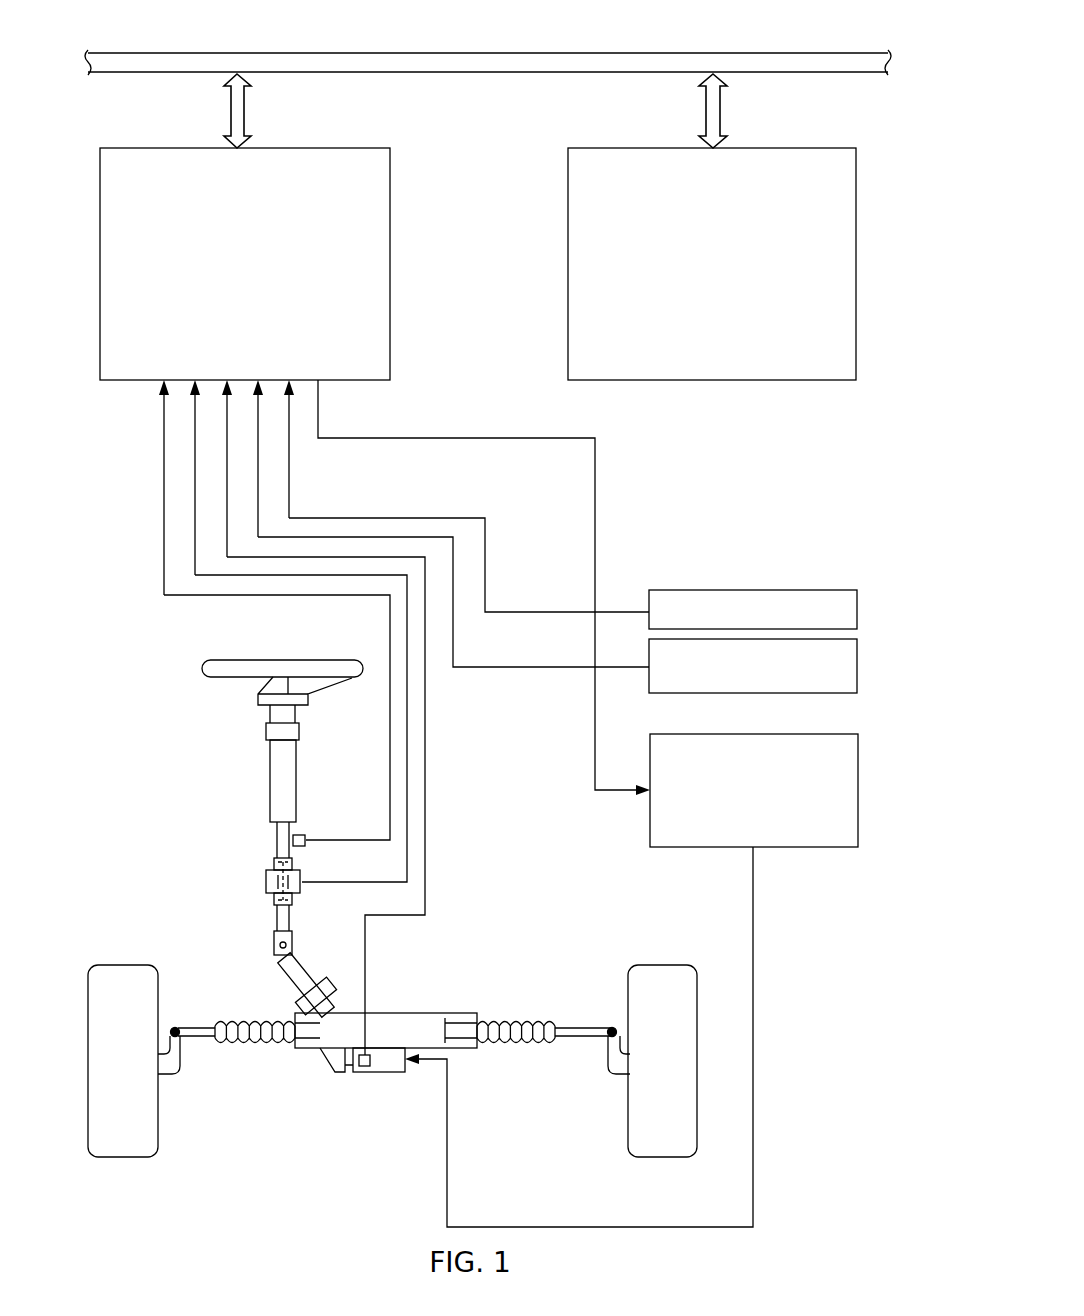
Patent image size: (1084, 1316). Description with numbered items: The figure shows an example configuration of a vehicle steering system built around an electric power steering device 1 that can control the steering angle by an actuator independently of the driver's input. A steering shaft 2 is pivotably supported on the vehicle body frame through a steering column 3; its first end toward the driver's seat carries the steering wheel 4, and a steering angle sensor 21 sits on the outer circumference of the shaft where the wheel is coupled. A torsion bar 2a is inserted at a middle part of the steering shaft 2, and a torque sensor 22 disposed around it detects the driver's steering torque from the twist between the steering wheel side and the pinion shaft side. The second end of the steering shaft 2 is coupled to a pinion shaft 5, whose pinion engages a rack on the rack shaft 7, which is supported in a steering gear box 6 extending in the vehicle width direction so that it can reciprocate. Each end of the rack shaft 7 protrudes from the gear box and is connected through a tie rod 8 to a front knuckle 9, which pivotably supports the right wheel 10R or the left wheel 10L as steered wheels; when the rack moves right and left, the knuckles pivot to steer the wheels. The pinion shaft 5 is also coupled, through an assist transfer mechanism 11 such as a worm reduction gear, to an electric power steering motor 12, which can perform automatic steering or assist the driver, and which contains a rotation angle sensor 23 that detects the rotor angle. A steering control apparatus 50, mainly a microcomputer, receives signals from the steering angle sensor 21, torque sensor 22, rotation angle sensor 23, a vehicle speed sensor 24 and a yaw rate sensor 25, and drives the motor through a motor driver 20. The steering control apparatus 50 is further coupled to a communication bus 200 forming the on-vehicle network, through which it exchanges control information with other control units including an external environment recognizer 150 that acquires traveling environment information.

The electric power steering device 1 is at (124, 670).
The steering shaft 2 is at (277, 840).
The torsion bar 2a is at (266, 883).
The steering column 3 is at (270, 775).
The steering wheel 4 is at (282, 660).
The pinion shaft 5 is at (298, 976).
The steering gear box 6 is at (397, 1013).
The rack shaft 7 is at (462, 1013).
The tie rod 8 is at (206, 1046).
The front knuckle 9 is at (170, 1074).
The right wheel 10R is at (125, 1157).
The left wheel 10L is at (663, 1157).
The assist transfer mechanism 11 is at (325, 1056).
The electric power steering motor 12 is at (392, 1072).
The motor driver 20 is at (858, 790).
The steering angle sensor 21 is at (306, 835).
The torque sensor 22 is at (302, 876).
The rotation angle sensor 23 is at (363, 1066).
The vehicle speed sensor 24 is at (858, 667).
The yaw rate sensor 25 is at (858, 612).
The steering control apparatus 50 is at (316, 147).
The external environment recognizer 150 is at (812, 147).
The communication bus 200 is at (490, 52).